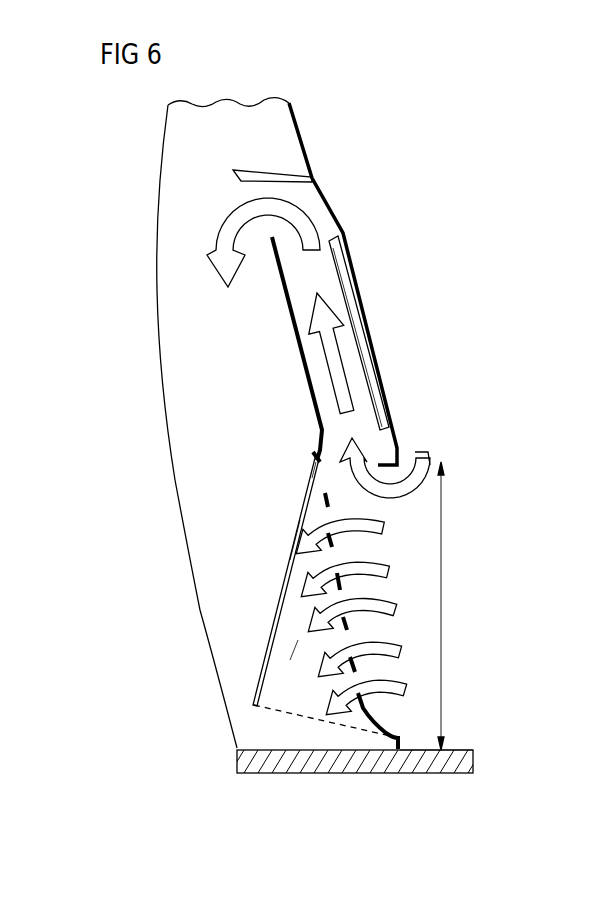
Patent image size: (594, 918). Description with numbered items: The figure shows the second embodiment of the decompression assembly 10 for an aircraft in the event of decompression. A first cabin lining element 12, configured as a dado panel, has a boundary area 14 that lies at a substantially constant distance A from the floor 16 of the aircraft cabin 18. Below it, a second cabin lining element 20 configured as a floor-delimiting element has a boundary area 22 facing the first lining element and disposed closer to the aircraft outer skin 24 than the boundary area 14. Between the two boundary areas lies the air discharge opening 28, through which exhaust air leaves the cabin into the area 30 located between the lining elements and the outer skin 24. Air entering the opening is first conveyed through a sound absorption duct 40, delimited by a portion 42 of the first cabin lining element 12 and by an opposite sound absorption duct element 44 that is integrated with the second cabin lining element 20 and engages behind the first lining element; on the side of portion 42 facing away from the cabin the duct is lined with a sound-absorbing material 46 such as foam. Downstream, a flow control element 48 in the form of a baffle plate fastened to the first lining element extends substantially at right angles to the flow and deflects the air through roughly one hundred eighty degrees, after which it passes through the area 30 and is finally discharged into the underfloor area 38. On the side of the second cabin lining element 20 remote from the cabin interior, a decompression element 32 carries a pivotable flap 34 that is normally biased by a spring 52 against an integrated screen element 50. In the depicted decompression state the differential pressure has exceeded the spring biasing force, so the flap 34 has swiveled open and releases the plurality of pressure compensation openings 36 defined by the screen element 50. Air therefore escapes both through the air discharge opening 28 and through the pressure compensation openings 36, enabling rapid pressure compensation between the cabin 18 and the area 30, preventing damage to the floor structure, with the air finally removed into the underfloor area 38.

The decompression assembly 10 is at (373, 142).
The first cabin lining element 12 is at (328, 195).
The boundary area 14 is at (430, 458).
The floor 16 is at (448, 752).
The aircraft cabin 18 is at (504, 562).
The second cabin lining element 20 is at (372, 705).
The boundary area 22 is at (313, 452).
The aircraft outer skin 24 is at (162, 425).
The air discharge opening 28 is at (323, 470).
The area 30 is at (220, 371).
The decompression element 32 is at (278, 545).
The flap 34 is at (277, 597).
The pressure compensation openings 36 is at (383, 530).
The underfloor area 38 is at (356, 785).
The sound absorption duct 40 is at (268, 323).
The portion of the first cabin lining element 42 is at (373, 330).
The sound absorption duct element 44 is at (310, 370).
The sound-absorbing material 46 is at (347, 290).
The flow control element 48 is at (270, 170).
The screen element 50 is at (313, 607).
The spring 52 is at (297, 710).
The distance A is at (443, 610).